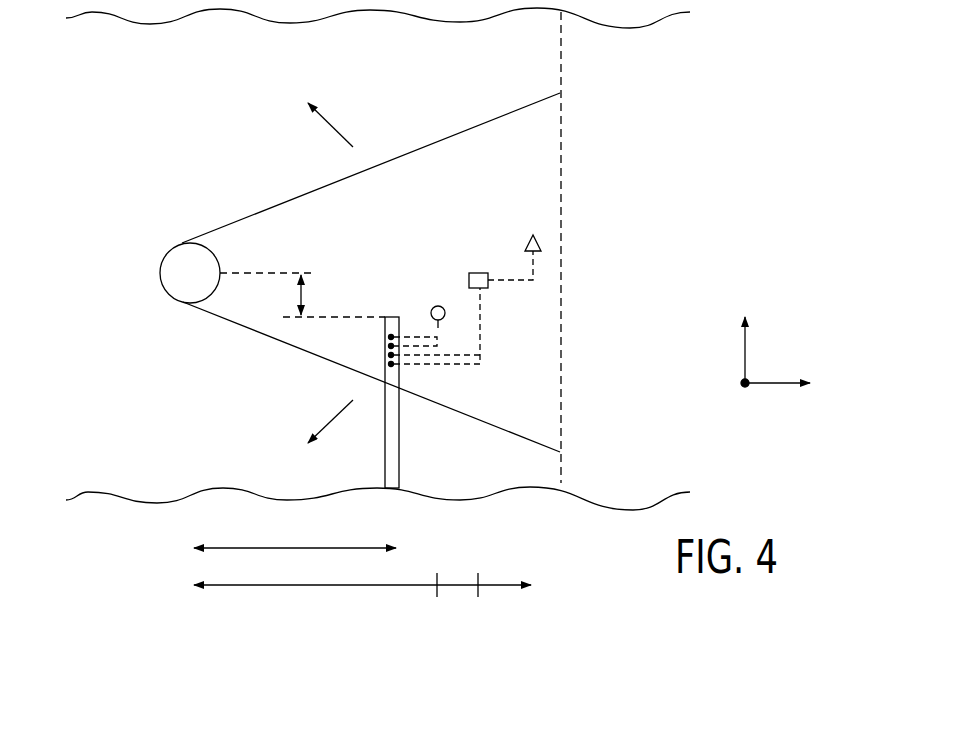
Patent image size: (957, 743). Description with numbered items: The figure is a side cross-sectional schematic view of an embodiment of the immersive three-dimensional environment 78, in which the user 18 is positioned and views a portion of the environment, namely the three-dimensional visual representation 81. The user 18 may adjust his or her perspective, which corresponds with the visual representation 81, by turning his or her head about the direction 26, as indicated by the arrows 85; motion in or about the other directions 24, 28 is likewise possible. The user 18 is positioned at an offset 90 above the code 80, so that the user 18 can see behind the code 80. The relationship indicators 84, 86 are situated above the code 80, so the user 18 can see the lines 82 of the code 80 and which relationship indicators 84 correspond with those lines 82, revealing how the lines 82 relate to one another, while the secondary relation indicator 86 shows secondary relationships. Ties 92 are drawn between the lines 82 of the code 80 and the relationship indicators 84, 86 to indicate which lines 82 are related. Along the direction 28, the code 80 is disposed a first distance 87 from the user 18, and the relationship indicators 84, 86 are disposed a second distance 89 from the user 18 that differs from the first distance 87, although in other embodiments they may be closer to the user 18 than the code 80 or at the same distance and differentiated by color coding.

The user 18 is at (160, 273).
The direction 24 is at (745, 360).
The direction 26 is at (772, 385).
The direction 28 is at (742, 385).
The immersive 3-D environment 78 is at (565, 305).
The code 80 is at (391, 317).
The 3-D visual representation 81 is at (433, 143).
The lines 82 is at (380, 337).
The relationship indicators 84 is at (427, 300).
The arrows 85 is at (338, 128).
The secondary relation indicator 86 is at (520, 237).
The first distance 87 is at (335, 548).
The second distance 89 is at (335, 585).
The offset 90 is at (307, 295).
The ties 92 is at (492, 345).